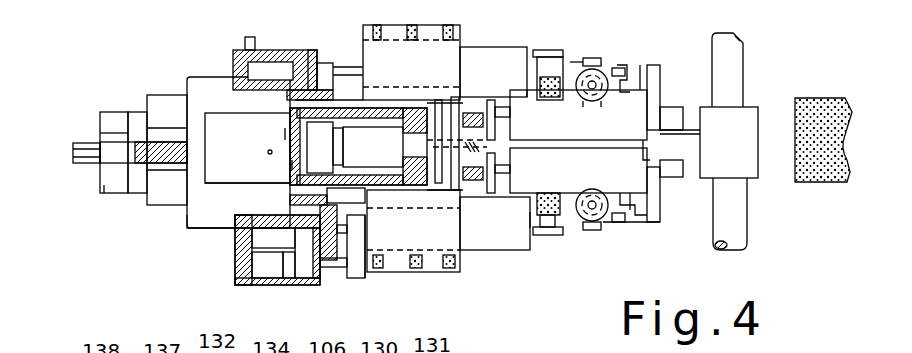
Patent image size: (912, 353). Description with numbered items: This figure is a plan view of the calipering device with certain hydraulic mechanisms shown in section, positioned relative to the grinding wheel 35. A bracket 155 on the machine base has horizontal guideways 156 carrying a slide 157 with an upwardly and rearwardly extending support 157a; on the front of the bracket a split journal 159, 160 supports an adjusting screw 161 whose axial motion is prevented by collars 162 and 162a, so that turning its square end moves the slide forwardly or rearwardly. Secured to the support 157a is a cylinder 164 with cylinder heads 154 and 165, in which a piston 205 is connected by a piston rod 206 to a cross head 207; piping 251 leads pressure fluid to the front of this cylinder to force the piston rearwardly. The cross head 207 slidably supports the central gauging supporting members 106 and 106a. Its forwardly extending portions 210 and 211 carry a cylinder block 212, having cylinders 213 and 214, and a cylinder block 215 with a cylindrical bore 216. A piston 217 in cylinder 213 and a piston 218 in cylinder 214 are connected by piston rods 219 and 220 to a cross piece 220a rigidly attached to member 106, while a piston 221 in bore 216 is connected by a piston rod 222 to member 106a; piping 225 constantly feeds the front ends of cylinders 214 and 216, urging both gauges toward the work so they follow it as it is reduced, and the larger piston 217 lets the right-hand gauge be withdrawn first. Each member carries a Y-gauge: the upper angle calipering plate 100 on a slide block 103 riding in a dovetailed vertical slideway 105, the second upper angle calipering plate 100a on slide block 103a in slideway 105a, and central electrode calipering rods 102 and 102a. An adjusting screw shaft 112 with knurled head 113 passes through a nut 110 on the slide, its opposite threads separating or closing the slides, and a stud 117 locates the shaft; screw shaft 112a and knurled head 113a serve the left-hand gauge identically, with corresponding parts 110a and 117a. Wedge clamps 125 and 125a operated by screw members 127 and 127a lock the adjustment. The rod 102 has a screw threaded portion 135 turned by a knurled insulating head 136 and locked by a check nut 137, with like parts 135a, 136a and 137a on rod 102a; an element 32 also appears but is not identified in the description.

The workpiece spindle 32 is at (737, 217).
The grinding wheel 35 is at (822, 100).
The upper angle calipering plate 100 is at (655, 213).
The second upper angle calipering plate 100a is at (665, 107).
The central electrode calipering rod 102 is at (653, 180).
The second electrode calipering rod 102a is at (657, 97).
The slide block 103 is at (640, 225).
The slide block 103a is at (643, 67).
The vertical slideway 105 is at (575, 228).
The vertical slideway 105a is at (572, 62).
The central gauging supporting member 106 is at (475, 240).
The central gauging supporting member 106a is at (479, 50).
The nut 110 is at (637, 153).
The upper control valve 110a is at (640, 130).
The adjusting screw shaft 112 is at (583, 187).
The screw shaft 112a is at (578, 115).
The knurled head 113 is at (612, 227).
The knurled head 113a is at (617, 60).
The stud 117 is at (593, 230).
The upper valve fitting 117a is at (618, 68).
The wedge clamp 125 is at (523, 220).
The wedge clamp 125a is at (523, 90).
The screw member 127 is at (547, 235).
The screw member 127a is at (545, 50).
The screw threaded portion 135 is at (470, 217).
The upper end plate 135a is at (460, 97).
The knurled insulating head 136 is at (462, 208).
The upper guide 136a is at (452, 87).
The check nut 137 is at (497, 167).
The upper seal 137a is at (497, 122).
The cylinder head 154 is at (447, 138).
The bracket 155 is at (137, 115).
The horizontal guideways 156 is at (162, 97).
The slide 157 is at (198, 77).
The upwardly and rearwardly extending support 157a is at (220, 183).
The split journal 159 is at (115, 130).
The split journal 160 is at (107, 197).
The adjusting screw 161 is at (73, 148).
The collar 162 is at (100, 170).
The collar 162a is at (115, 137).
The cylinder 164 is at (375, 93).
The cylinder head 165 is at (292, 165).
The piston 205 is at (286, 133).
The piston rod 206 is at (355, 147).
The cross head 207 is at (430, 25).
The forwardly extending portion 210 is at (293, 200).
The forwardly extending portion 211 is at (352, 67).
The cylinder block 212 is at (245, 283).
The cylinder 213 is at (287, 280).
The cylinder 214 is at (207, 227).
The cylinder block 215 is at (222, 96).
The cylindrical bore 216 is at (272, 62).
The piston 217 is at (307, 283).
The piston 218 is at (237, 270).
The piston rod 219 is at (327, 277).
The piston rod 220 is at (355, 278).
The cross piece 220a is at (363, 270).
The piston 221 is at (303, 47).
The piston rod 222 is at (332, 63).
The piping 225 is at (247, 40).
The piping 251 is at (270, 150).